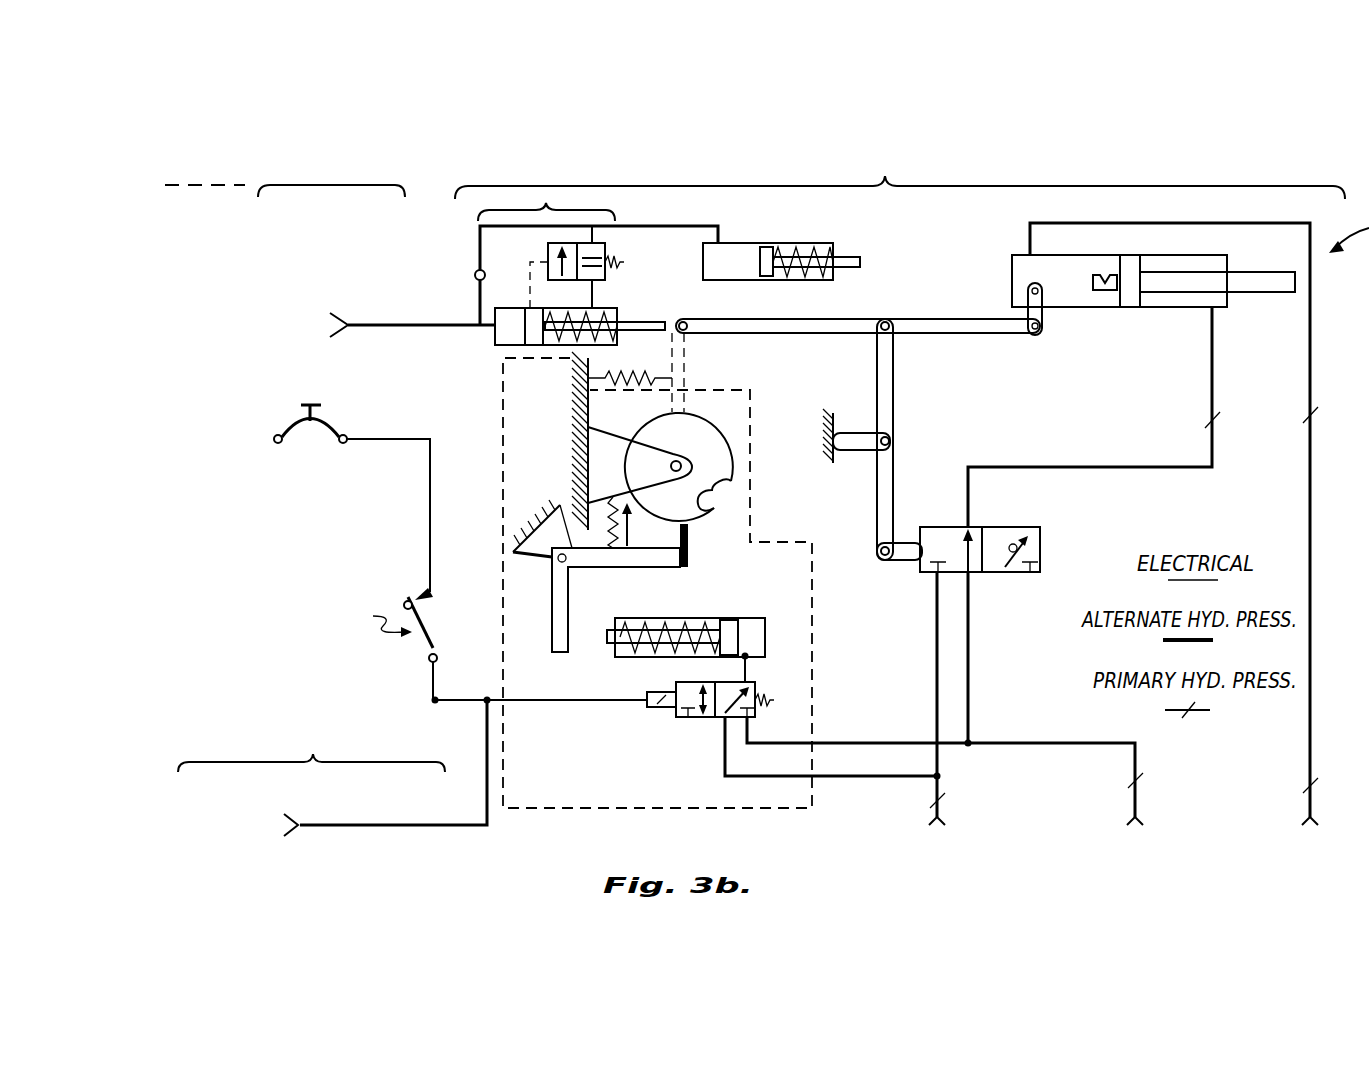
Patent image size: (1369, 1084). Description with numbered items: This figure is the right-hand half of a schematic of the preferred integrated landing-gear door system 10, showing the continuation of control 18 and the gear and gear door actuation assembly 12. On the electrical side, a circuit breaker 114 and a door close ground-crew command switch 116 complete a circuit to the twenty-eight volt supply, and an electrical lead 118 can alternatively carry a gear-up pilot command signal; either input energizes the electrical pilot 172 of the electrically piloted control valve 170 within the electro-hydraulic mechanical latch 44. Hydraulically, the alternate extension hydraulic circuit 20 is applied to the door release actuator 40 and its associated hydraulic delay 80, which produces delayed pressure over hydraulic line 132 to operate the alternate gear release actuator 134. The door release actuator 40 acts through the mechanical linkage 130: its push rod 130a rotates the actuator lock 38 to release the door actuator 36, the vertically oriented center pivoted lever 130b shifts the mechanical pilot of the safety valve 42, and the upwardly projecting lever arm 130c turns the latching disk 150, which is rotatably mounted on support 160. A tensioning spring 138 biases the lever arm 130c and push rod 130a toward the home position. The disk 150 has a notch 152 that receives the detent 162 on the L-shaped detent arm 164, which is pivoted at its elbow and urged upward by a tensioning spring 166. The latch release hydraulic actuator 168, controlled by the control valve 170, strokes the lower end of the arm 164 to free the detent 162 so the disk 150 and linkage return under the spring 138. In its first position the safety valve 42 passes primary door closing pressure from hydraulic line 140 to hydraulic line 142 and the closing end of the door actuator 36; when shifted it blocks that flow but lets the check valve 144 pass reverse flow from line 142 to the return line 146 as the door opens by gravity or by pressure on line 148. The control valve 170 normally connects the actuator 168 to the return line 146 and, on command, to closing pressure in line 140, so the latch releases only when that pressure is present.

The control 18 is at (274, 186).
The gear and gear door actuation assembly 12 is at (887, 186).
The hydraulic delay 80 is at (551, 249).
The hydraulic line 132 is at (630, 226).
The alternate gear release actuator 134 is at (796, 234).
The door release actuator 40 is at (608, 303).
The alternate extension hydraulic circuit 20 is at (357, 324).
The door actuator 36 is at (1218, 255).
The mechanical linkage 130 is at (856, 415).
The push rod 130a is at (920, 318).
The center pivoted lever 130b is at (893, 372).
The lever arm 130c is at (697, 337).
The actuator lock 38 is at (1046, 322).
The electro-hydraulic mechanical latch 44 is at (756, 386).
The tensioning spring 138 is at (636, 356).
The support 160 is at (592, 432).
The latching disk 150 is at (718, 487).
The notch 152 is at (703, 516).
The tensioning spring 166 is at (620, 541).
The detent 162 is at (690, 552).
The L-shaped detent arm 164 is at (569, 594).
The latch release hydraulic actuator 168 is at (737, 618).
The control valve 170 is at (690, 717).
The electrical pilot 172 is at (648, 707).
The hydraulic line 142 is at (1062, 467).
The safety valve 42 is at (1010, 533).
The check valve 144 is at (1040, 540).
The return line 146 is at (937, 630).
The hydraulic line 140 is at (970, 632).
The hydraulic line 148 is at (1312, 712).
The circuit breaker 114 is at (352, 412).
The door close ground-crew command switch 116 is at (438, 620).
The pilot command signal 10 is at (312, 805).
The electrical lead 118 is at (372, 827).